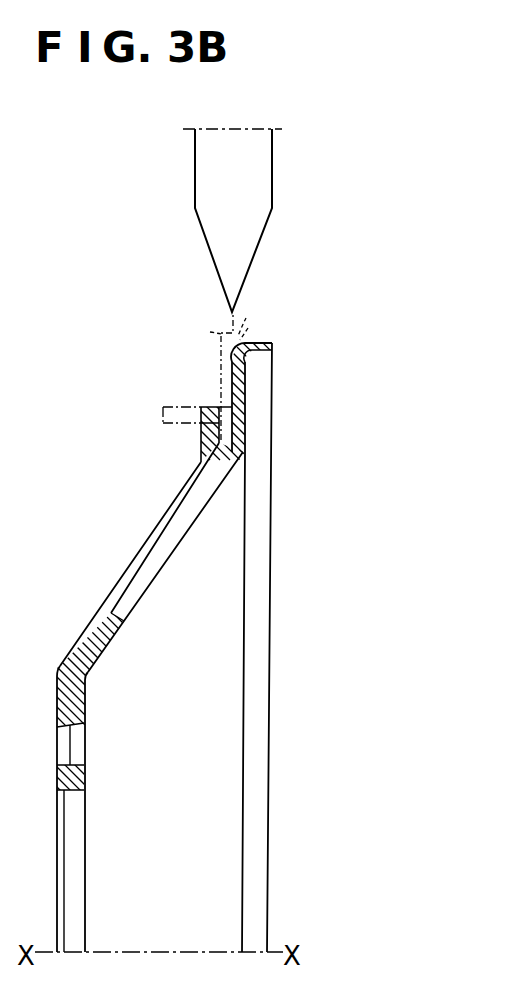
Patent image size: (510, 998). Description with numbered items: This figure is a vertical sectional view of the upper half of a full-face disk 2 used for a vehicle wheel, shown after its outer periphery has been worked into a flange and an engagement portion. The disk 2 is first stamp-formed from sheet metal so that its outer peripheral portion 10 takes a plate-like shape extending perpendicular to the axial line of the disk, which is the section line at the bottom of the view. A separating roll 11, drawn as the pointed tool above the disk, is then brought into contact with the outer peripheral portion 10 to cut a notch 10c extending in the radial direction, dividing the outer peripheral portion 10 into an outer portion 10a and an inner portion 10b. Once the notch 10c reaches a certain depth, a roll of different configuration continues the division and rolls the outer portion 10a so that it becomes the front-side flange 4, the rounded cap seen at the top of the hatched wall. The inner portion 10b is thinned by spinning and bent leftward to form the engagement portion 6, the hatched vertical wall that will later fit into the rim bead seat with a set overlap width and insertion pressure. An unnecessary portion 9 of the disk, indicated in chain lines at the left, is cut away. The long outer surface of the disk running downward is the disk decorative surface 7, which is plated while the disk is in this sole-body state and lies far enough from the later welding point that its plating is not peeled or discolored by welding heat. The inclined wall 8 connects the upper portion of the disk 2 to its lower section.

The disk 2 is at (84, 632).
The front-side flange 4 is at (274, 343).
The engagement portion 6 is at (228, 398).
The disk decorative surface 7 is at (257, 405).
The inclined tube 8 is at (168, 557).
The unnecessary portion 9 is at (163, 425).
The outer peripheral portion 10 is at (222, 318).
The outer portion 10a is at (248, 328).
The inner portion 10b is at (214, 333).
The notch 10c is at (246, 318).
The separating roll 11 is at (272, 178).